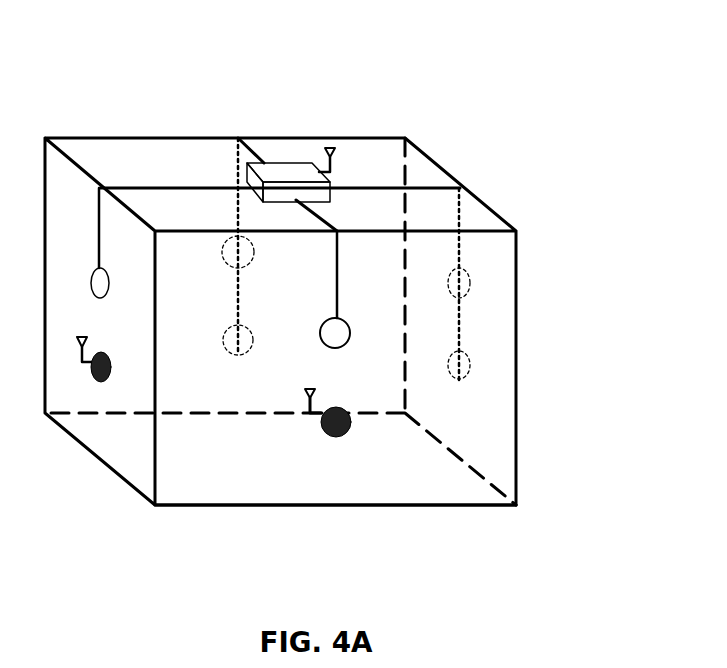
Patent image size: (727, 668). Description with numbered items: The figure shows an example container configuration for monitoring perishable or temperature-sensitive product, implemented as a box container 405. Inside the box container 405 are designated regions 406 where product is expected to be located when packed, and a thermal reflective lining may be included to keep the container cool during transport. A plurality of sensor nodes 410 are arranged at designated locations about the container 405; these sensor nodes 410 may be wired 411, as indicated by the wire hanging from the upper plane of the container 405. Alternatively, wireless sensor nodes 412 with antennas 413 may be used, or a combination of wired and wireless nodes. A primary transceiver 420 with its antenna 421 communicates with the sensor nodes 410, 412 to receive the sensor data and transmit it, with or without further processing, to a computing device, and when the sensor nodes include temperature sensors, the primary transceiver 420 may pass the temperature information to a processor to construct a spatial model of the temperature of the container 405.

The box container 405 is at (517, 297).
The designated regions 406 is at (449, 493).
The sensor nodes 410 is at (322, 338).
The wire 411 is at (337, 257).
The wireless sensor nodes 412 is at (340, 437).
The antenna 413 is at (307, 400).
The primary transceiver 420 is at (270, 165).
The antenna 421 is at (332, 147).